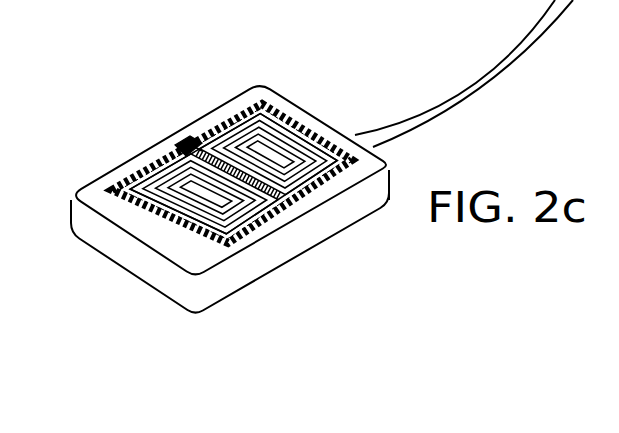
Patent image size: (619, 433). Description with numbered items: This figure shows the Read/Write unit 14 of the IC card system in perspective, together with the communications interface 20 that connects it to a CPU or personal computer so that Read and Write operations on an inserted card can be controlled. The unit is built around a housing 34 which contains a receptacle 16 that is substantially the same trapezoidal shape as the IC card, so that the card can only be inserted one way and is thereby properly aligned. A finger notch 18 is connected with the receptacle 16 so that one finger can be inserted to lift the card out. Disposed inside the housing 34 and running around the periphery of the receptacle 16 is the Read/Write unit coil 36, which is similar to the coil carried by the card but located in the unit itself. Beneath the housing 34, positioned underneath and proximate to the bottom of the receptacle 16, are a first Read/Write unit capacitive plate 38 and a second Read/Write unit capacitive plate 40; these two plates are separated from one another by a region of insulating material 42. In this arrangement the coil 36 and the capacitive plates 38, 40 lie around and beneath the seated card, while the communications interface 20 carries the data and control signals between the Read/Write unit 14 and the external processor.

The Read/Write unit 14 is at (177, 308).
The receptacle 16 is at (261, 224).
The finger notch 18 is at (205, 158).
The communications interface 20 is at (493, 67).
The housing 34 is at (350, 208).
The Read/Write unit coil 36 is at (132, 211).
The first Read/Write unit capacitive plate 38 is at (90, 180).
The second Read/Write unit capacitive plate 40 is at (308, 131).
The region of insulating material 42 is at (222, 150).